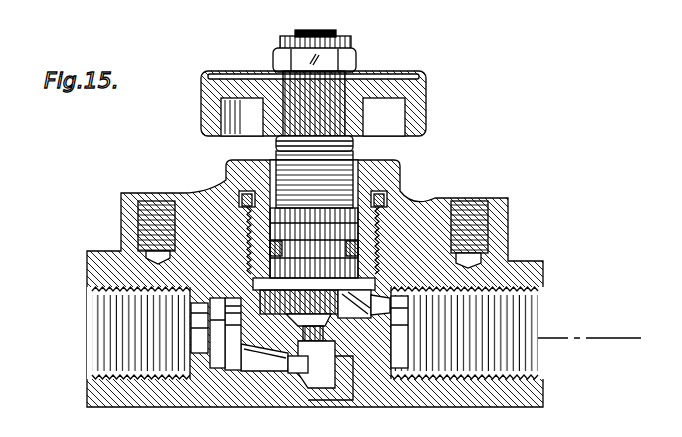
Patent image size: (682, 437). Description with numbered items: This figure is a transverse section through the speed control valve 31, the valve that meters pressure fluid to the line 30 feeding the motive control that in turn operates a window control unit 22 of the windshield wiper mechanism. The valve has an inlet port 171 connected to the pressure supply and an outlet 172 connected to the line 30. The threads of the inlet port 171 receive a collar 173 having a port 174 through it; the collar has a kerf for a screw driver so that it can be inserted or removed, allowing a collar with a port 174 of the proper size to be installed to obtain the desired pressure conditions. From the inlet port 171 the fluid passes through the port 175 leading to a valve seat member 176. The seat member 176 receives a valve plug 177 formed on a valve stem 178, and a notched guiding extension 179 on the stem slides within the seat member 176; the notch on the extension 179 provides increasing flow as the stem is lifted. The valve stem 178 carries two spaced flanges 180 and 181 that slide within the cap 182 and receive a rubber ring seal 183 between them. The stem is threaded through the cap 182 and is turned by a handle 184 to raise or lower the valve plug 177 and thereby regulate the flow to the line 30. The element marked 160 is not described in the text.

The handle 184 is at (418, 95).
The cap 182 is at (393, 165).
The valve stem 178 is at (355, 222).
The flange 180 is at (435, 193).
The speed control valve 31 is at (528, 176).
The flange 181 is at (273, 253).
The rubber ring seal 183 is at (337, 253).
The valve plug 177 is at (322, 297).
The inlet port 171 is at (95, 343).
The outlet 172 is at (517, 350).
The line 30 is at (610, 330).
The window control unit 22 is at (639, 434).
The passage wall 160 is at (413, 426).
The collar 173 is at (222, 342).
The port 174 is at (210, 328).
The port 175 is at (262, 358).
The notched guiding extension 179 is at (301, 362).
The valve seat member 176 is at (337, 345).